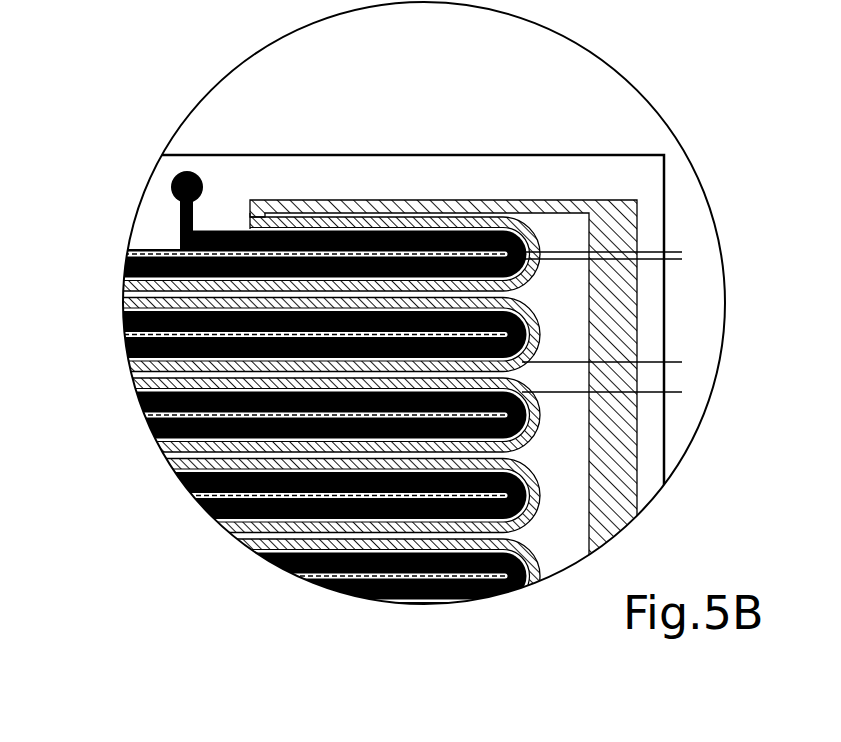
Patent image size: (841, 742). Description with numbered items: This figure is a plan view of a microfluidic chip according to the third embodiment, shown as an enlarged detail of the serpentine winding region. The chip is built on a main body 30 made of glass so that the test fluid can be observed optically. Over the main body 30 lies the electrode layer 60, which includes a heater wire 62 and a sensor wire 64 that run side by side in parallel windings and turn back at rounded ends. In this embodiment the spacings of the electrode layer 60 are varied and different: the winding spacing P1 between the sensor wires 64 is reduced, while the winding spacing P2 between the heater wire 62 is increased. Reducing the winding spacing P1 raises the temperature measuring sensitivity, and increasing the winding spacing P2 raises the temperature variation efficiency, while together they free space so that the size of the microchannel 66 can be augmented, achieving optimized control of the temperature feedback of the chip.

The main body 30 is at (476, 155).
The electrode layer 60 is at (276, 415).
The heater wire 62 is at (300, 415).
The sensor wire 64 is at (140, 423).
The microchannel 66 is at (176, 182).
The winding spacing between the sensor wires P1 is at (677, 213).
The winding spacing between the heater wire P2 is at (677, 320).